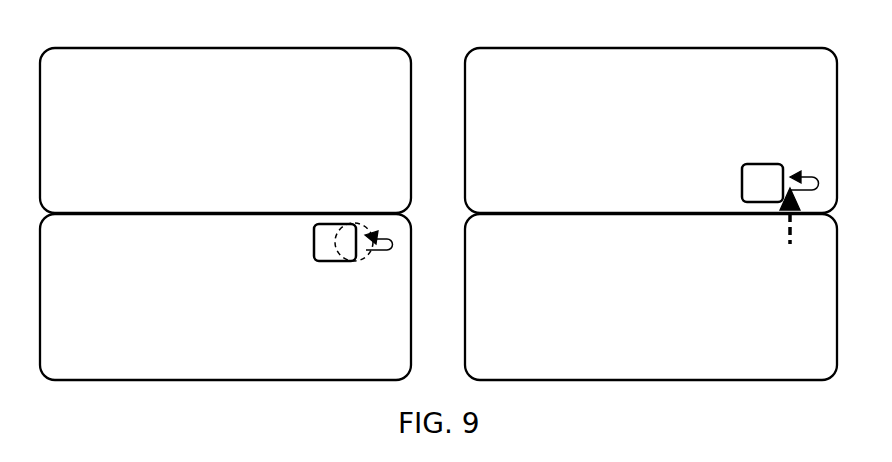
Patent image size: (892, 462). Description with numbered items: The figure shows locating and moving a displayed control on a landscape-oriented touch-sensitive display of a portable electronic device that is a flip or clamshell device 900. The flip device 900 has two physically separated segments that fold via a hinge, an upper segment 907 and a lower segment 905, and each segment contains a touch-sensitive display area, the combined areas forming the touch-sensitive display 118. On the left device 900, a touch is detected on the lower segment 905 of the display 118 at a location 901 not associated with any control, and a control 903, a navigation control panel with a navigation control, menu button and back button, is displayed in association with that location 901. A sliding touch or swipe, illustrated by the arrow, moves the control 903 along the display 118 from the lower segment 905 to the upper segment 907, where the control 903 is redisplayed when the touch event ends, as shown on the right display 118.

The flip device 900 is at (81, 36).
The touch-sensitive display 118 is at (377, 55).
The upper segment 907 is at (465, 87).
The lower segment 905 is at (465, 272).
The control 903 is at (310, 257).
The location 901 is at (363, 255).